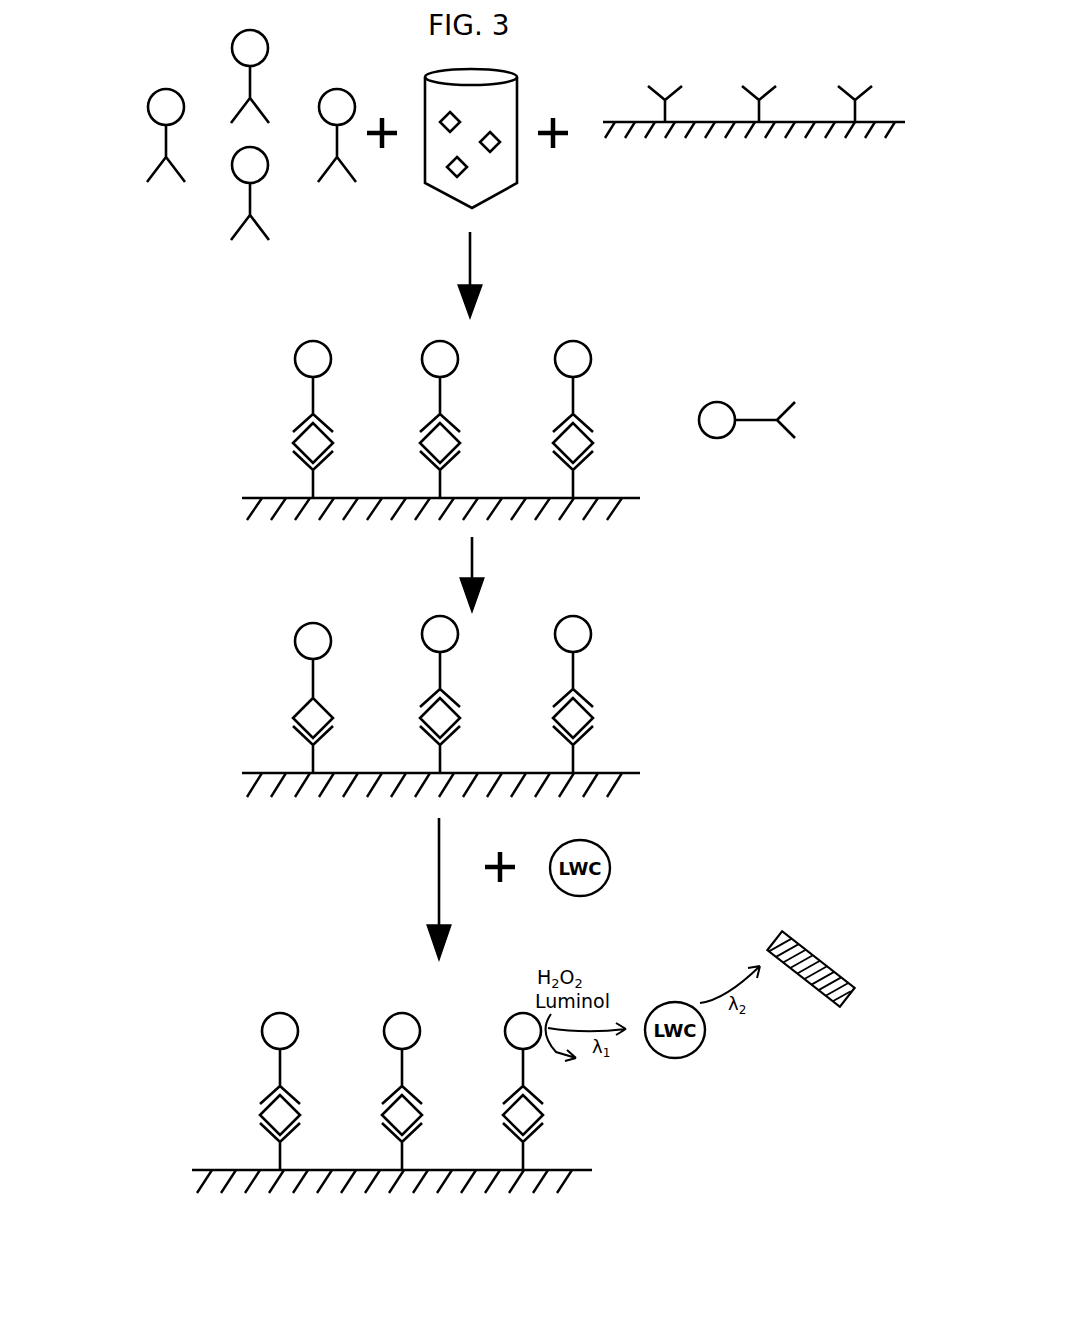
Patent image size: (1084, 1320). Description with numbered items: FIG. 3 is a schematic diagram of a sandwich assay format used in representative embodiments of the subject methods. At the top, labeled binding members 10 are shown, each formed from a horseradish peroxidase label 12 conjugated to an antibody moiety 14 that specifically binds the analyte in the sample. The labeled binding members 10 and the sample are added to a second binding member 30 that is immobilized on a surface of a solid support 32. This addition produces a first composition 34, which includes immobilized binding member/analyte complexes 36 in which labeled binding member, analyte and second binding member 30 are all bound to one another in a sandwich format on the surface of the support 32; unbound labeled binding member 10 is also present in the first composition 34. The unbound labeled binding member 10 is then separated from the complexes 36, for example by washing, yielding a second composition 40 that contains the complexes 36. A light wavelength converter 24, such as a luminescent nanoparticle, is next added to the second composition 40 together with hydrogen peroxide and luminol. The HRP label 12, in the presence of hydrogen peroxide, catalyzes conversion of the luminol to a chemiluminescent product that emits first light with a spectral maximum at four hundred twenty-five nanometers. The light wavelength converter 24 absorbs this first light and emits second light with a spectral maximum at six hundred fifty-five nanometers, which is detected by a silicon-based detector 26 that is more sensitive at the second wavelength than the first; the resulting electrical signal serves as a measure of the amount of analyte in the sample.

The labeled binding members 10 is at (118, 30).
The horseradish peroxidase (HRP) label 12 is at (172, 89).
The antibody moiety 14 is at (157, 174).
The second binding member 30 is at (858, 109).
The solid support 32 is at (885, 132).
The first composition 34 is at (227, 350).
The immobilized binding member/analyte complexes 36 is at (592, 405).
The second composition 40 is at (227, 627).
The light wavelength converter 24 is at (610, 862).
The silicon-based detector 26 is at (817, 955).